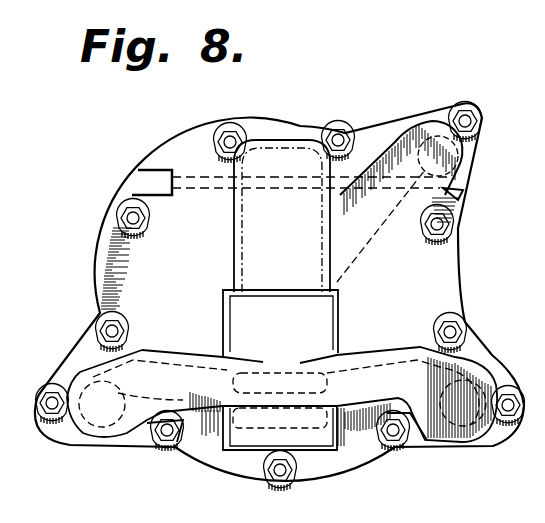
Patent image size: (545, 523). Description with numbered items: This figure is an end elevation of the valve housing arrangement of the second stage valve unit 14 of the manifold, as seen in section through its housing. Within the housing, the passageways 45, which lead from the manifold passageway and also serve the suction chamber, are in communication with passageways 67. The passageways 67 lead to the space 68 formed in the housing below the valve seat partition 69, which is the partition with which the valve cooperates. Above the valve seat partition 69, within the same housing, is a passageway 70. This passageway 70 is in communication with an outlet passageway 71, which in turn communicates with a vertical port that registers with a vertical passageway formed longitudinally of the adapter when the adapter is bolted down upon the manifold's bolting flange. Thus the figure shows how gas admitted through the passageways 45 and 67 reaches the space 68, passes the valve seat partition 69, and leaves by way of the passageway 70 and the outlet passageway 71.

The second stage valve unit 14 is at (232, 128).
The passageways 45 is at (103, 417).
The passageways 67 is at (200, 427).
The space 68 is at (278, 372).
The valve seat partition 69 is at (323, 347).
The passageway 70 is at (267, 238).
The outlet passageway 71 is at (397, 259).